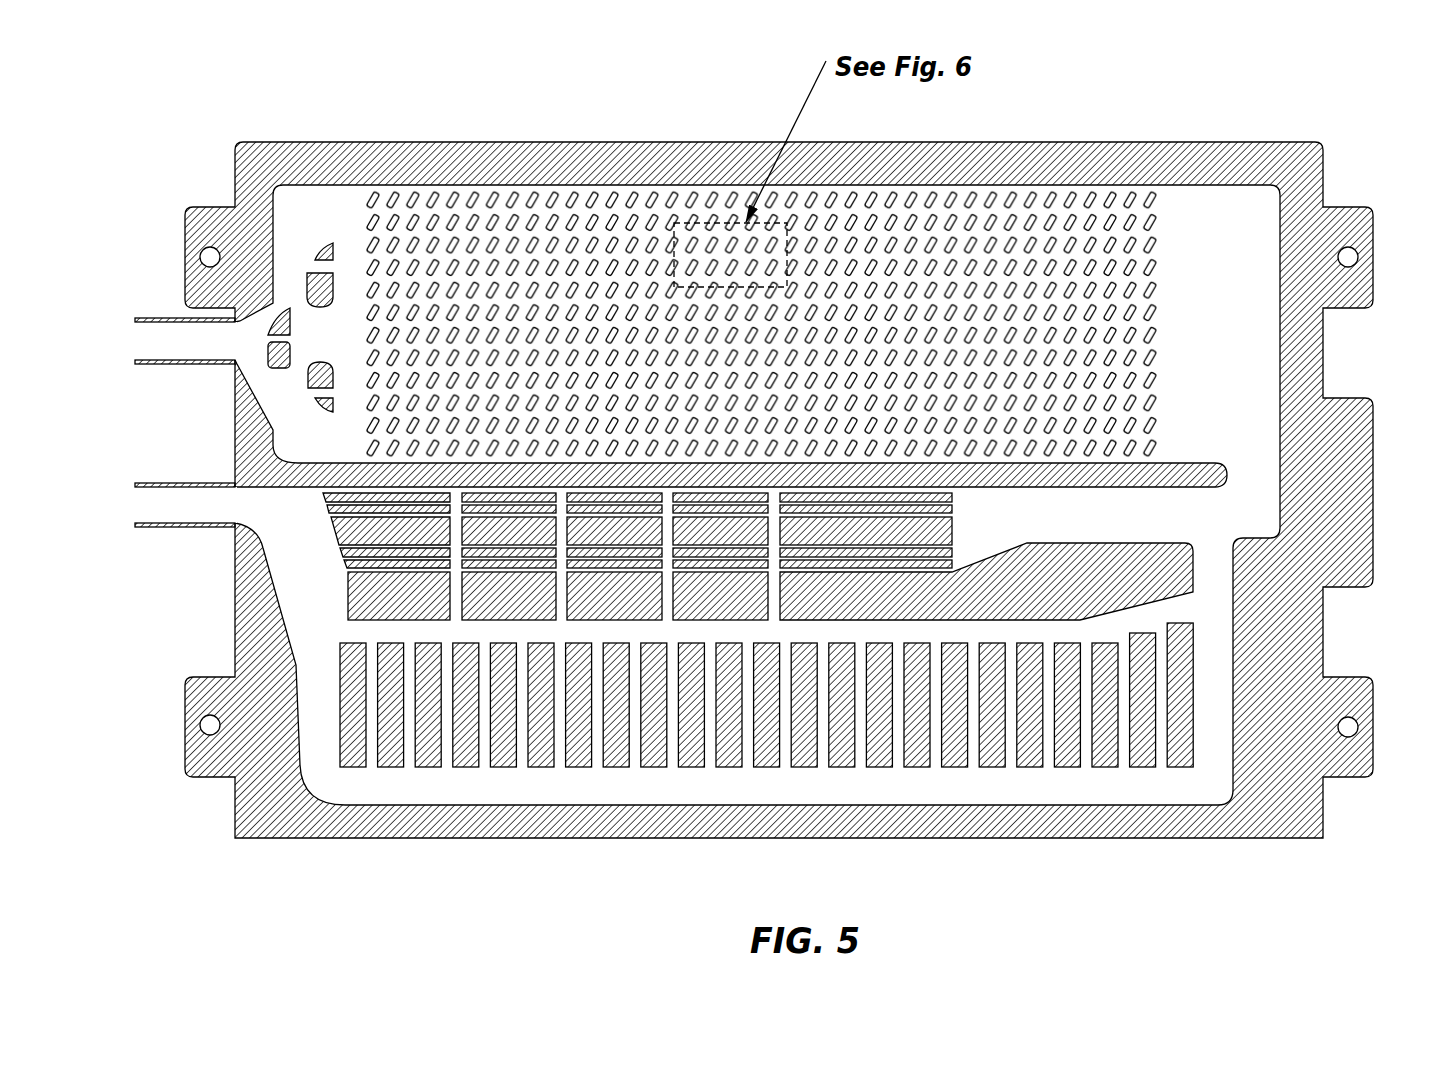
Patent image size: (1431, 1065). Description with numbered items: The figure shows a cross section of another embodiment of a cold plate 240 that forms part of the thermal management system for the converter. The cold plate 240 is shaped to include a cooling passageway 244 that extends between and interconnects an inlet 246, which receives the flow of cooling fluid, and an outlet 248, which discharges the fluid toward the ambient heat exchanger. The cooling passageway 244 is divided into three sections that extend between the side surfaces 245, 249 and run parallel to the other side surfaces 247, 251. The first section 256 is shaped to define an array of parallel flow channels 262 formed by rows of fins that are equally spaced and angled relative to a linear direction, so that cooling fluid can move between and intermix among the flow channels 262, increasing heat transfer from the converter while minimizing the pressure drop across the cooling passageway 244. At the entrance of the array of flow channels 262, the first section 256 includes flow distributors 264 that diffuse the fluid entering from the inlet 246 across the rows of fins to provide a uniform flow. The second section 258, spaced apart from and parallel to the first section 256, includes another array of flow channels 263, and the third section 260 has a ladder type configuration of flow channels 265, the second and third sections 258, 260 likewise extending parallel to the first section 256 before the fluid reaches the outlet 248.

The cold plate 240 is at (192, 100).
The cooling passageway 244 is at (322, 165).
The side surface 245 is at (238, 598).
The inlet 246 is at (150, 343).
The side surface 247 is at (650, 140).
The outlet 248 is at (160, 503).
The side surface 249 is at (1325, 357).
The side surface 251 is at (882, 840).
The first section 256 is at (475, 170).
The second section 258 is at (1172, 517).
The third section 260 is at (1238, 757).
The flow channels 262 is at (571, 192).
The flow channels 263 is at (958, 555).
The flow distributors 264 is at (312, 247).
The flow channels 265 is at (1088, 770).